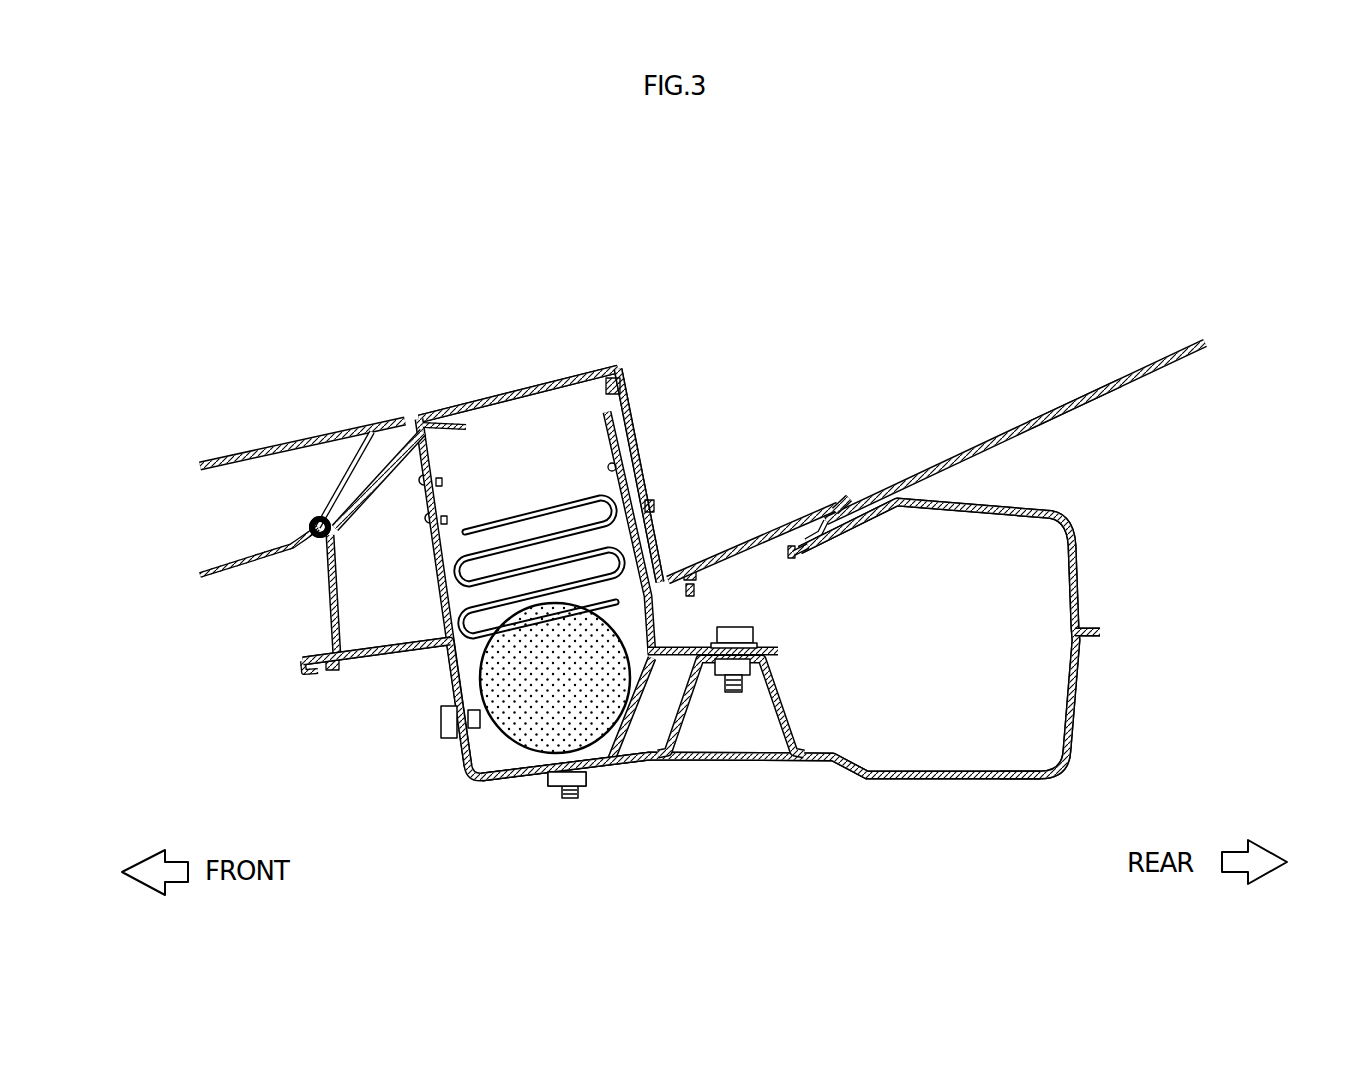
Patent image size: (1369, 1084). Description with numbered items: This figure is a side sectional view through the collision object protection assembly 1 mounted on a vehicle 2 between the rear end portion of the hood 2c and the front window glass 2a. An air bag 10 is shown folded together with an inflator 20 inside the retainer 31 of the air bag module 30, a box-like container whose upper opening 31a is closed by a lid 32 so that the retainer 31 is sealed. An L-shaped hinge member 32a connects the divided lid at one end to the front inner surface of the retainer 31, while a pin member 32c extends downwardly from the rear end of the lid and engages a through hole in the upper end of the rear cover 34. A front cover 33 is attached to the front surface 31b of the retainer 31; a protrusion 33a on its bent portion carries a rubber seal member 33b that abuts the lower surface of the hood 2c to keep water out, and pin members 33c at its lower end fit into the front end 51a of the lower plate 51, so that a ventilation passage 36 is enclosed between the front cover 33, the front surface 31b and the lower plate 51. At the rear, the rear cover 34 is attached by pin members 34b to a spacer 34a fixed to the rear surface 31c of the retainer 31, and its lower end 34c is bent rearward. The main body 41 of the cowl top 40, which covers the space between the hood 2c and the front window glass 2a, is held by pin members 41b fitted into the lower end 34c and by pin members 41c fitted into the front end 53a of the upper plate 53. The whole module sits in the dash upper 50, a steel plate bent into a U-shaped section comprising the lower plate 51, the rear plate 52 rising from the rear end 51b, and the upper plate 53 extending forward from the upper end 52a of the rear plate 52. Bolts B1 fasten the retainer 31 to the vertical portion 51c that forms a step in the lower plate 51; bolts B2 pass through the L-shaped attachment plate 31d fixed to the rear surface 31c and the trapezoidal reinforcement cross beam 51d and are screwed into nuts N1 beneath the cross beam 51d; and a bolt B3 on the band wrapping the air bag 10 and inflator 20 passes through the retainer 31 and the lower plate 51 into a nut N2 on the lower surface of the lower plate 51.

The collision object protection assembly 1 is at (735, 238).
The vehicle 2 is at (998, 432).
The front window glass 2a is at (1070, 400).
The hood 2c is at (248, 464).
The air bag 10 is at (516, 508).
The inflator 20 is at (548, 730).
The air bag module 30 is at (614, 366).
The retainer 31 is at (644, 705).
The upper opening 31a is at (535, 405).
The front surface 31b is at (428, 556).
The rear surface 31c is at (645, 470).
The attachment plate 31d is at (782, 654).
The lid 32 is at (430, 405).
The hinge member 32a is at (455, 440).
The pin member 32c is at (622, 382).
The front cover 33 is at (392, 468).
The protrusion 33a is at (322, 540).
The seal member 33b is at (312, 518).
The pin members 33c is at (332, 668).
The rear cover 34 is at (632, 416).
The spacer 34a is at (654, 506).
The pin members 34b is at (612, 466).
The lower end 34c is at (690, 576).
The ventilation passage 36 is at (405, 603).
The cowl top 40 is at (760, 516).
The main body 41 is at (800, 528).
The pin members 41b is at (690, 596).
The pin members 41c is at (800, 547).
The dash upper 50 is at (1080, 574).
The lower plate 51 is at (766, 766).
The front end 51a is at (312, 672).
The rear end 51b is at (1058, 772).
The vertical portion 51c is at (447, 664).
The reinforcement cross beam 51d is at (784, 708).
The rear plate 52 is at (1080, 686).
The upper end 52a is at (1062, 532).
The upper plate 53 is at (1012, 502).
The front end 53a is at (790, 545).
The bolts B1 is at (440, 726).
The bolts B2 is at (733, 630).
The bolt B3 is at (568, 798).
The nuts N1 is at (740, 680).
The nut N2 is at (580, 786).